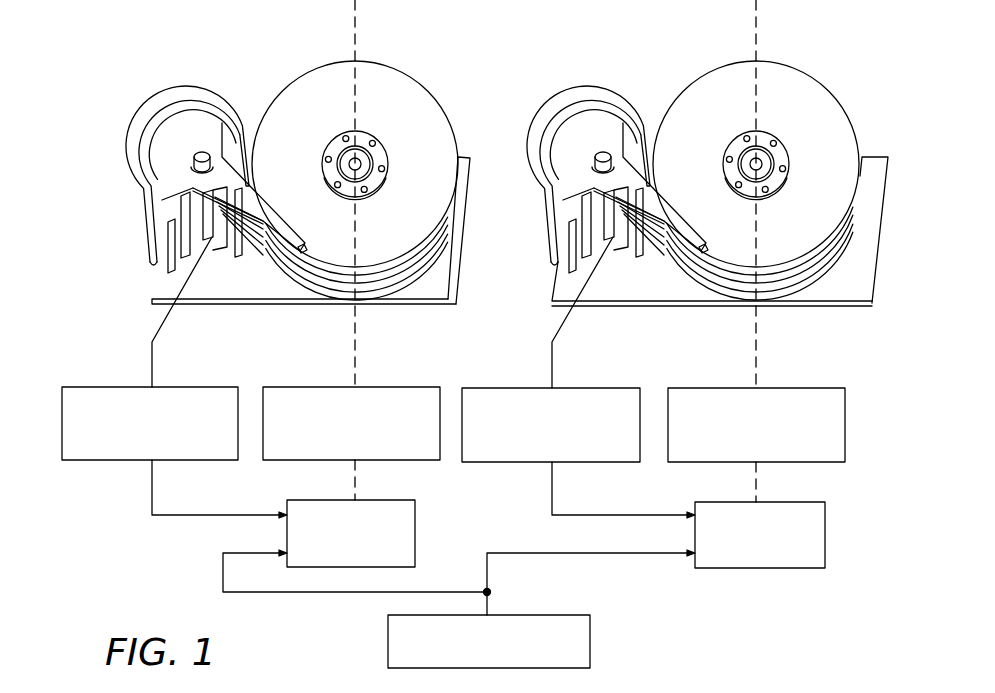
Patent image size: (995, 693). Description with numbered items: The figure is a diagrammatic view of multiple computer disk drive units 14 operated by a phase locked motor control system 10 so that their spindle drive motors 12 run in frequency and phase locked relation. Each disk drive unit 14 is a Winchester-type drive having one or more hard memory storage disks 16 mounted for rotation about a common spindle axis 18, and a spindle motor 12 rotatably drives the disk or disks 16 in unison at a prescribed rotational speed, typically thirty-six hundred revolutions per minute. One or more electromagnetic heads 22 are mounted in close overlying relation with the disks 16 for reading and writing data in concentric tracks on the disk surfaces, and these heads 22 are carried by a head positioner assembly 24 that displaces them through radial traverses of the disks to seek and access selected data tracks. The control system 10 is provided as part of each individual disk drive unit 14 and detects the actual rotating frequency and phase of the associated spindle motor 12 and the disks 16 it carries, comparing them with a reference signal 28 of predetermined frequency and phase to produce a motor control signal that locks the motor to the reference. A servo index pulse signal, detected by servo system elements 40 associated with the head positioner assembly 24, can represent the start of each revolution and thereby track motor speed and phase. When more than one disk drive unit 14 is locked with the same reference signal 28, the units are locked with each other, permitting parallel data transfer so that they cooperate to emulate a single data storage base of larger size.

The motor control system 10 is at (138, 540).
The spindle motor 12 is at (398, 387).
The disk drive unit 14 is at (447, 92).
The memory storage disk 16 is at (409, 283).
The spindle axis 18 is at (355, 32).
The electromagnetic head 22 is at (310, 247).
The head positioner assembly 24 is at (200, 148).
The reference signal 28 is at (387, 642).
The servo system elements 40 is at (117, 343).